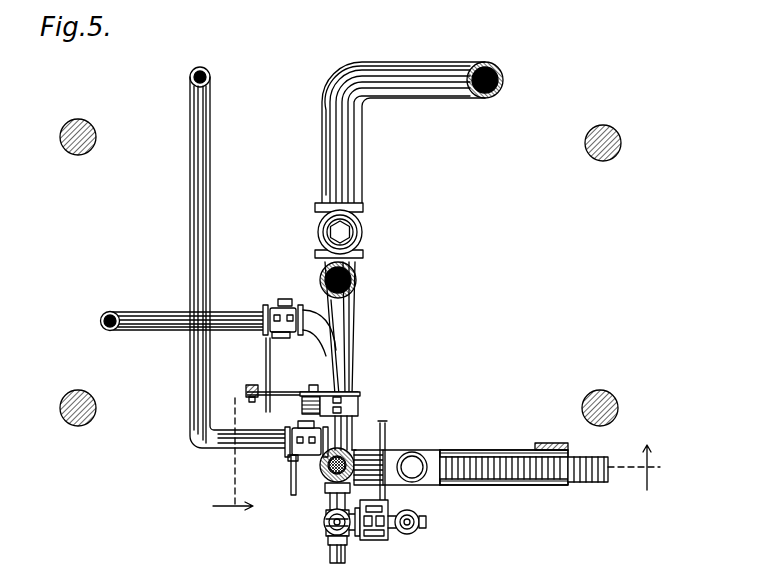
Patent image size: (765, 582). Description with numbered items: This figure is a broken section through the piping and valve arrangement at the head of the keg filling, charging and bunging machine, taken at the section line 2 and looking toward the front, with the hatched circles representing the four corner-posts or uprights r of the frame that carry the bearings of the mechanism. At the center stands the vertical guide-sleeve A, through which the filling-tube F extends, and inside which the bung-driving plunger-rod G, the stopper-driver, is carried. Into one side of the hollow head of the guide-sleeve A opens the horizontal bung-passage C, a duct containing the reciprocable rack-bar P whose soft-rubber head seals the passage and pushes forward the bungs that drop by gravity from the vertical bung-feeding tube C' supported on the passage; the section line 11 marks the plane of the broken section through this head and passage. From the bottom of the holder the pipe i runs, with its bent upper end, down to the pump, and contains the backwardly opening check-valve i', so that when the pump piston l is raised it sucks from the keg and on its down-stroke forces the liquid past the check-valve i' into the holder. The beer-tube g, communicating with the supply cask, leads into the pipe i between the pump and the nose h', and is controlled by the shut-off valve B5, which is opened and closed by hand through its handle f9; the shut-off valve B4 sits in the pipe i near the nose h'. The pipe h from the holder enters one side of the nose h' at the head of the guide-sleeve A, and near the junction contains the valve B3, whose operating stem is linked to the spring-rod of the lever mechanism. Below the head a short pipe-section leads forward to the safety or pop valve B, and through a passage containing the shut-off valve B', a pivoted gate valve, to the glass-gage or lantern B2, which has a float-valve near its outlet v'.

The corner-posts or uprights r is at (69, 153).
The pipe h is at (220, 257).
The pipe i is at (411, 228).
The check-valve i' is at (358, 230).
The beer-tube g is at (160, 311).
The shut-off valve B5 is at (283, 300).
The handle f9 is at (272, 374).
The shut-off valve B4 is at (358, 394).
The valve B3 is at (301, 427).
The bung-driving plunger-rod G is at (321, 469).
The bung-feeding tube C' is at (398, 455).
The bung-passage C is at (504, 455).
The rack-bar P is at (596, 483).
The section line 11 is at (644, 467).
The section line 2 is at (233, 466).
The guide-sleeve A is at (385, 435).
The nose h' is at (368, 426).
The filling-tube F is at (329, 490).
The piston l is at (327, 503).
The safety or pop valve B is at (324, 536).
The shut-off valve B' is at (368, 536).
The glass-gage or lantern B2 is at (413, 534).
The outlet v' is at (439, 520).